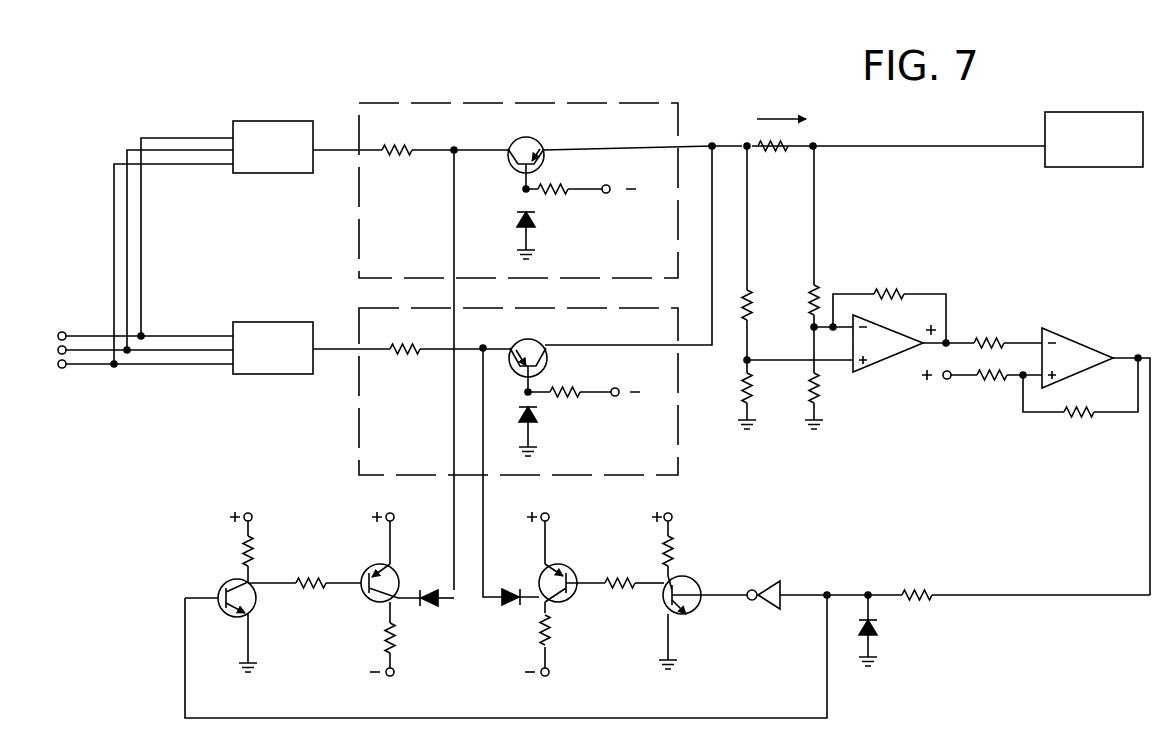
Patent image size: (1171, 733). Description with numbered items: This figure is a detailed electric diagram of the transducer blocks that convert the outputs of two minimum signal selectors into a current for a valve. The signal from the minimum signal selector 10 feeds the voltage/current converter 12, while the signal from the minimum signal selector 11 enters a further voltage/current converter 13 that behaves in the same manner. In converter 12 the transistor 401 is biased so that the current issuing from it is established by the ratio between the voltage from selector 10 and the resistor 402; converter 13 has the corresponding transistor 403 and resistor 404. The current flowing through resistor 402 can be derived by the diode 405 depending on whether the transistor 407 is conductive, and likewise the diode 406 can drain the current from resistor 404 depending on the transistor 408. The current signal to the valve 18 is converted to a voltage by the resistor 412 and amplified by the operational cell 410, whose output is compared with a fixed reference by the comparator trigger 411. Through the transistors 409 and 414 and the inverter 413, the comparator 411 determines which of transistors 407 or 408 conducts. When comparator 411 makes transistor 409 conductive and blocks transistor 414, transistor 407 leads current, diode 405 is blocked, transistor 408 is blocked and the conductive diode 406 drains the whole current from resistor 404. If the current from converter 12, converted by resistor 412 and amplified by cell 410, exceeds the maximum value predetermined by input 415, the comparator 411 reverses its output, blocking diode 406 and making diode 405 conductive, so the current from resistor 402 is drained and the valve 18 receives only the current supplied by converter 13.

The minimum signal selector 10 is at (273, 127).
The minimum signal selector 11 is at (263, 334).
The voltage/current converter 12 is at (519, 115).
The voltage/current converter 13 is at (375, 420).
The valve 18 is at (1089, 120).
The transistor 401 is at (547, 133).
The resistor 402 is at (406, 137).
The transistor 403 is at (547, 338).
The resistor 404 is at (411, 336).
The diode 405 is at (428, 614).
The diode 406 is at (511, 609).
The transistor 407 is at (368, 564).
The transistor 408 is at (566, 558).
The transistor 409 is at (239, 592).
The operational cell 410 is at (867, 378).
The comparator trigger 411 is at (1085, 461).
The resistor 412 is at (767, 157).
The inverter 413 is at (774, 576).
The transistor 414 is at (686, 571).
The maximum value setting input 415 is at (982, 387).